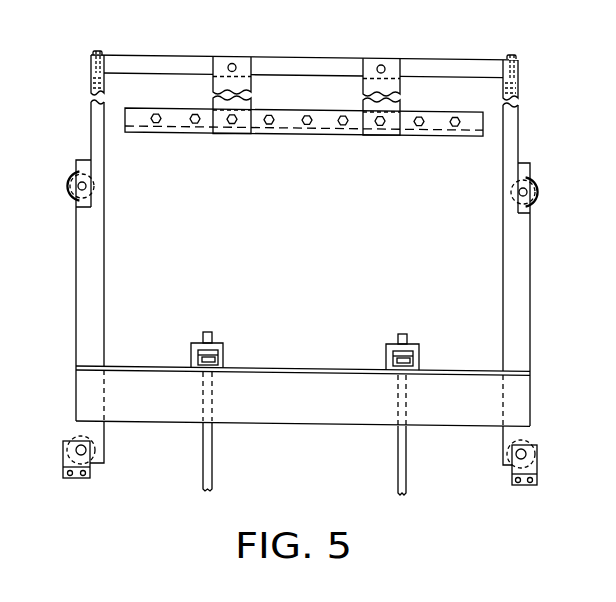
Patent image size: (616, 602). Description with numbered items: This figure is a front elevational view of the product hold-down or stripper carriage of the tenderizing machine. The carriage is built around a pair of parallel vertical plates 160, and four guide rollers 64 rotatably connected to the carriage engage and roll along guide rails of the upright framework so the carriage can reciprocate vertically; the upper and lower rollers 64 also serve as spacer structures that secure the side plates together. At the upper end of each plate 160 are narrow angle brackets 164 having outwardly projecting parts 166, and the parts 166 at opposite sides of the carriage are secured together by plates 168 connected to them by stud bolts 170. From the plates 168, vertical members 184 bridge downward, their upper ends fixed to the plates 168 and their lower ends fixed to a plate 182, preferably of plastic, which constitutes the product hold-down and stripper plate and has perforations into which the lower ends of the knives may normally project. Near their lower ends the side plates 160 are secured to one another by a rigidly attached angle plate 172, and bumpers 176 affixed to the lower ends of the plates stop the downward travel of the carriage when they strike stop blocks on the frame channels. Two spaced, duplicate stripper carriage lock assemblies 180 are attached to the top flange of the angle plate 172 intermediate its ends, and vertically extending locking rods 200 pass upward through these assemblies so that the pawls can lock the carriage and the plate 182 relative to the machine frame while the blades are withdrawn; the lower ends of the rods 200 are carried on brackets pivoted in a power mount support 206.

The guide rollers 64 is at (69, 184).
The vertical plates 160 is at (100, 278).
The angle brackets 164 is at (91, 143).
The outwardly projecting parts 166 is at (91, 79).
The plates 168 is at (177, 55).
The stud bolts 170 is at (100, 51).
The angle plate 172 is at (177, 418).
The bumpers 176 is at (70, 480).
The stripper carriage lock assemblies 180 is at (223, 350).
The stripper plate 182 is at (323, 135).
The vertical members 184 is at (362, 85).
The locking rods 200 is at (212, 445).
The power mount support 206 is at (12, 84).